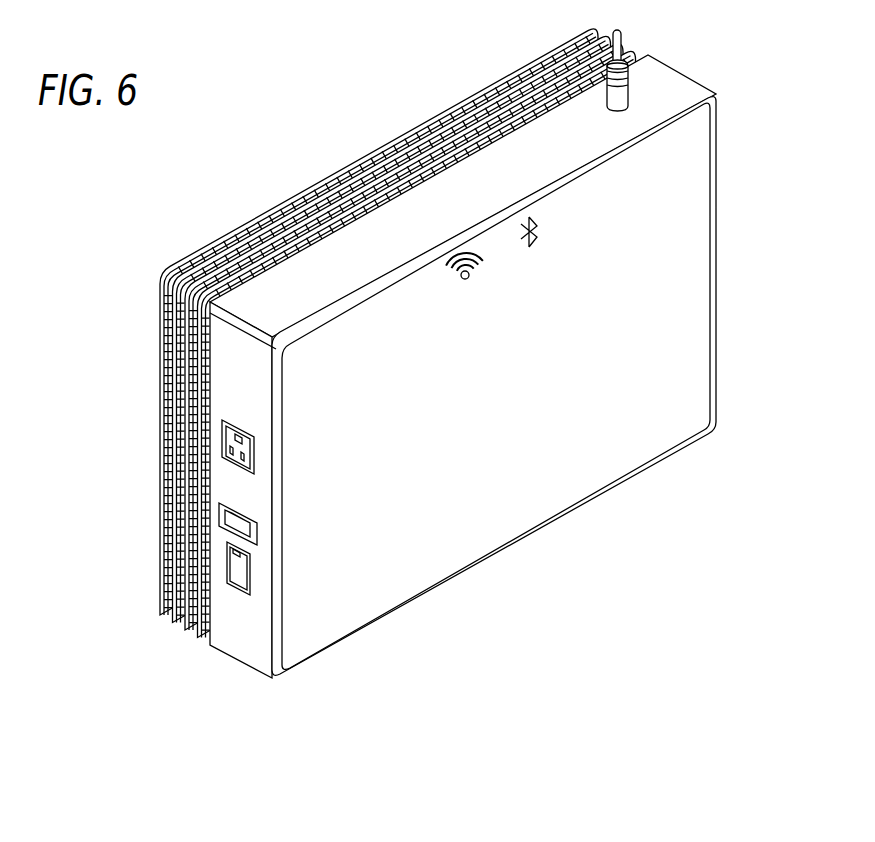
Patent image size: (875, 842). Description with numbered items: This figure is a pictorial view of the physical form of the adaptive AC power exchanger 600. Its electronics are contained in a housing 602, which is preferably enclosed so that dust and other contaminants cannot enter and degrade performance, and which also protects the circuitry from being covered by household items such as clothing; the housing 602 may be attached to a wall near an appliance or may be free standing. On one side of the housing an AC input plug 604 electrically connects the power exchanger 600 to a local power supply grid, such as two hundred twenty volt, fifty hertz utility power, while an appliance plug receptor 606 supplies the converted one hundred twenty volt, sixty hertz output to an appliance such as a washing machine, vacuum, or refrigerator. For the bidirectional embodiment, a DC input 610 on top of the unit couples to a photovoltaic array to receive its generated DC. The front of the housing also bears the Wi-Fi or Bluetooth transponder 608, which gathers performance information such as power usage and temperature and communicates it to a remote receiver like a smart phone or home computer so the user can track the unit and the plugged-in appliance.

The adaptive AC power exchanger 600 is at (506, 353).
The housing 602 is at (673, 343).
The AC input plug 604 is at (250, 573).
The appliance plug receptor 606 is at (255, 456).
The Wi-Fi or Bluetooth transponder 608 is at (503, 265).
The DC input 610 is at (630, 97).